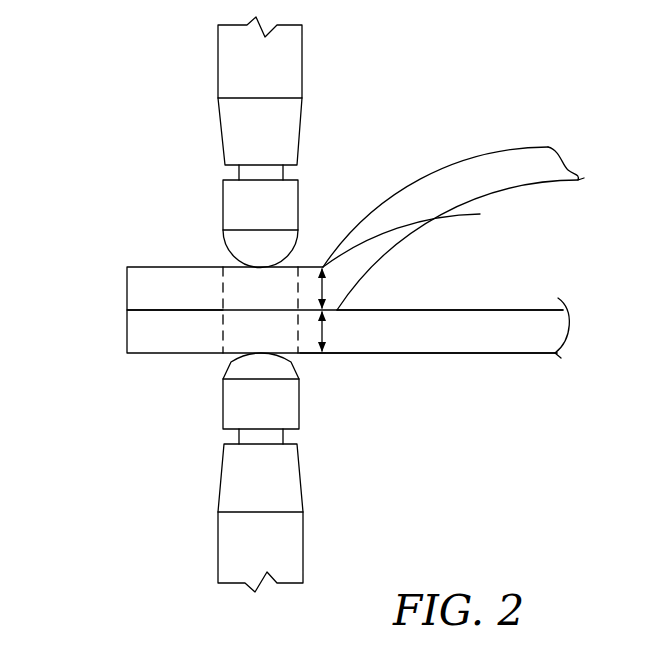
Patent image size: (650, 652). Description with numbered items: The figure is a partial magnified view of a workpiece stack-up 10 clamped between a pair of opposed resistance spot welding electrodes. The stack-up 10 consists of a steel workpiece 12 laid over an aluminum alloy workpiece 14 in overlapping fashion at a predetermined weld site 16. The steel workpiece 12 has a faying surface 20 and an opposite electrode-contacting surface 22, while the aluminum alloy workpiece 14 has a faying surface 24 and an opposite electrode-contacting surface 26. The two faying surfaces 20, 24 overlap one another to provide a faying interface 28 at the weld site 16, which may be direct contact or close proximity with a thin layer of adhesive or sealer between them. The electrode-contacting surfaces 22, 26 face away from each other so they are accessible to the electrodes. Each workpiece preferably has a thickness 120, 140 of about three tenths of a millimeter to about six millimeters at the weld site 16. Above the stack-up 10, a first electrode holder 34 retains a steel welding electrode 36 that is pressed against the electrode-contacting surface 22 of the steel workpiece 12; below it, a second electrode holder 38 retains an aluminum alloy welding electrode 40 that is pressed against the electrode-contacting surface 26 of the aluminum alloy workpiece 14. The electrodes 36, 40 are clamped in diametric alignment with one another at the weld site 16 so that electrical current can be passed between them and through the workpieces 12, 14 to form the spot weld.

The workpiece stack-up 10 is at (120, 300).
The steel workpiece 12 is at (552, 187).
The aluminum alloy workpiece 14 is at (530, 335).
The weld site 16 is at (220, 295).
The faying surface 20 is at (548, 216).
The electrode-contacting surface 22 is at (480, 213).
The faying surface 24 is at (520, 310).
The electrode-contacting surface 26 is at (470, 353).
The faying interface 28 is at (172, 305).
The first electrode holder 34 is at (283, 131).
The steel welding electrode 36 is at (215, 202).
The second electrode holder 38 is at (283, 470).
The aluminum alloy welding electrode 40 is at (215, 411).
The thickness 120 is at (325, 290).
The thickness 140 is at (325, 330).